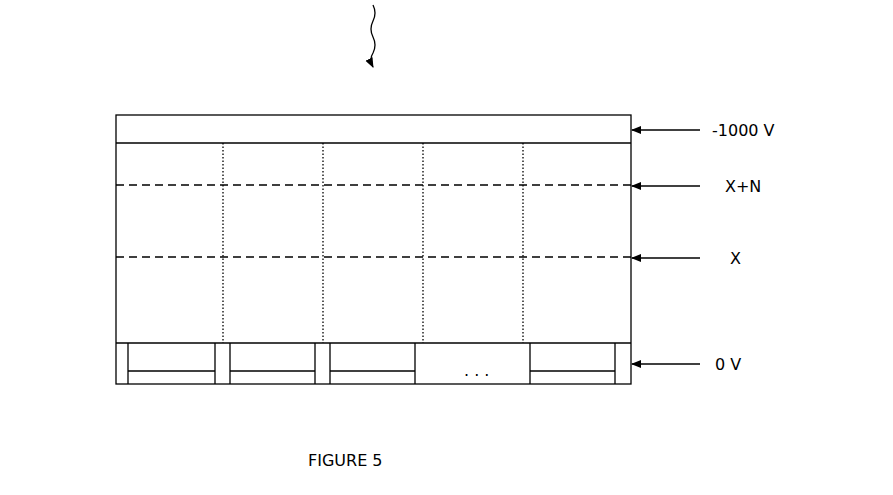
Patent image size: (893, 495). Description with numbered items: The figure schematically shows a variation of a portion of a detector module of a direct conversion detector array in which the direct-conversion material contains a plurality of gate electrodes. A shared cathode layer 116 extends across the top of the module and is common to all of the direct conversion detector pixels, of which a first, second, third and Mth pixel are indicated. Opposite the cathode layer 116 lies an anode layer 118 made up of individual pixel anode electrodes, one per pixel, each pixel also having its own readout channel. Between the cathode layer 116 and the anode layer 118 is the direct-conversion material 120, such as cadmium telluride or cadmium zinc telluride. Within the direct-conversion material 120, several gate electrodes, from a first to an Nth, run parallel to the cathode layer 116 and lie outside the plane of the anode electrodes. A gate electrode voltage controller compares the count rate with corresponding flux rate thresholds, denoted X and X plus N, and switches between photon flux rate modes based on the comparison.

The cathode layer 116 is at (116, 131).
The direct-conversion material 120 is at (116, 300).
The anode layer 118 is at (116, 345).